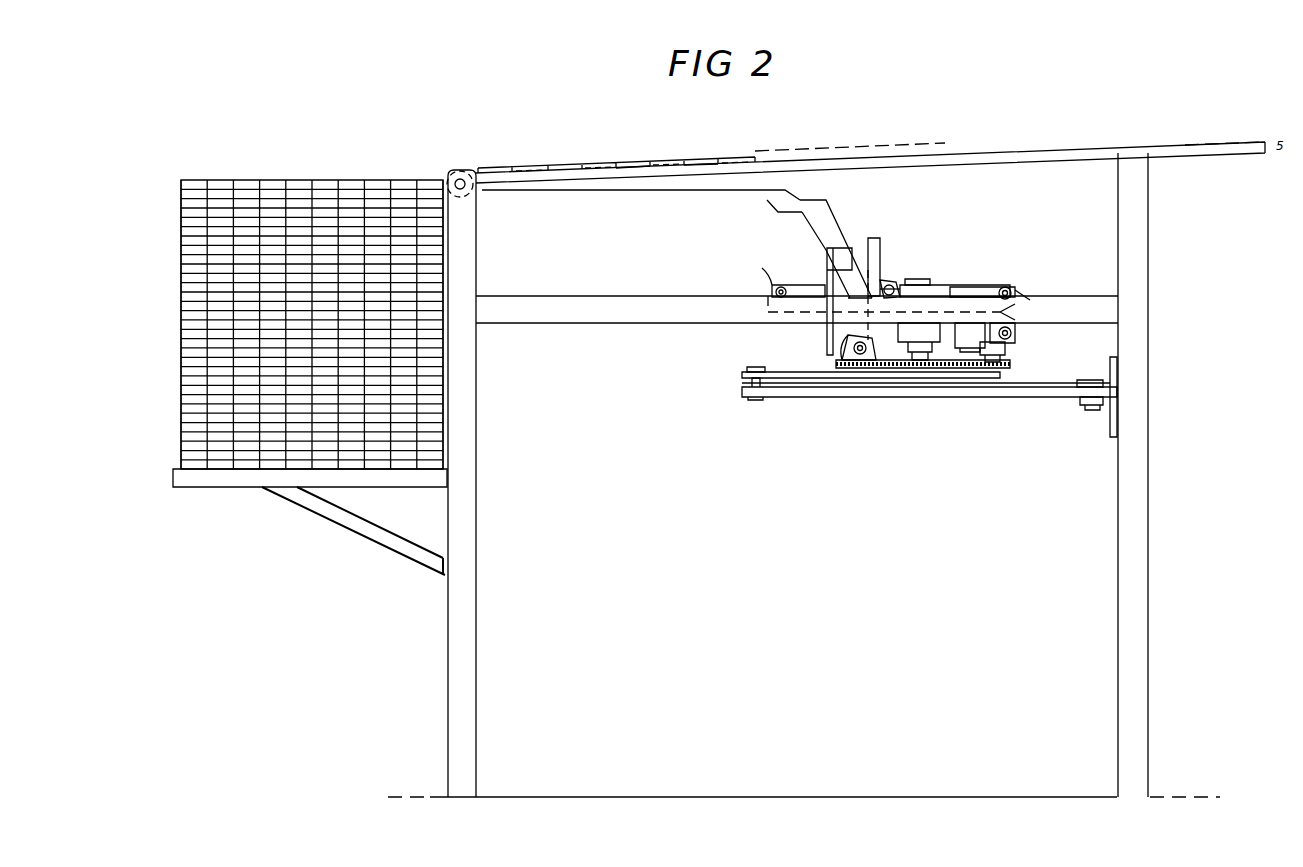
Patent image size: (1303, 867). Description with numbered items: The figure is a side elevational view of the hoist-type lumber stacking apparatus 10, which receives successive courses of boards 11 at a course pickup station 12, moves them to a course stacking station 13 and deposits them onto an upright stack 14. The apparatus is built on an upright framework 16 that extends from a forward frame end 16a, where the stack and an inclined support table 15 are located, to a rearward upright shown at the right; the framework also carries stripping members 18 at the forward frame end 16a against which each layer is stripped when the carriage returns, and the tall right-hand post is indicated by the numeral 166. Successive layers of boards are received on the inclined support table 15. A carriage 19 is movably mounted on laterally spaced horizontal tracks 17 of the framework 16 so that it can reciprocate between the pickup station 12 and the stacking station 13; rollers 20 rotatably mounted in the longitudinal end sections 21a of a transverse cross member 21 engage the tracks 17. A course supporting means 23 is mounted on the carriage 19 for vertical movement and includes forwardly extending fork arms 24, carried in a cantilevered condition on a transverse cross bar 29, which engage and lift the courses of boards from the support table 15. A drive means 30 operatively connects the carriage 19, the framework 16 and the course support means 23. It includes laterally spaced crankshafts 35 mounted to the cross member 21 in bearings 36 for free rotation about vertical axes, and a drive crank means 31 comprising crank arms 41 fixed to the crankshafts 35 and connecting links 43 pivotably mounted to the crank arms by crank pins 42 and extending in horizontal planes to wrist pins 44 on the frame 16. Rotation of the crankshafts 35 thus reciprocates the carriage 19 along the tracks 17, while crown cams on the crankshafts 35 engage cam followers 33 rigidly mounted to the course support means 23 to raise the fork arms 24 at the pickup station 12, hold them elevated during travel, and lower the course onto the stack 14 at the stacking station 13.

The hoist-type stacking apparatus 10 is at (956, 150).
The boards 11 is at (621, 162).
The course pickup station 12 is at (566, 160).
The course stacking station 13 is at (296, 178).
The upright stack 14 is at (181, 231).
The inclined support table 15 is at (695, 171).
The upright framework 16 is at (648, 326).
The forward frame end 16a is at (478, 522).
The right column 166 is at (1147, 266).
The horizontal tracks 17 is at (631, 298).
The stripping members 18 is at (460, 170).
The carriage 19 is at (996, 290).
The rollers 20 is at (776, 288).
The transverse cross member 21 is at (936, 298).
The longitudinal end sections 21a is at (1018, 298).
The course supporting means 23 is at (834, 206).
The fork arms 24 is at (652, 192).
The transverse cross bar 29 is at (840, 262).
The drive means 30 is at (1012, 361).
The drive crank means 31 is at (868, 398).
The cam followers 33 is at (832, 355).
The crankshafts 35 is at (936, 366).
The bearings 36 is at (930, 286).
The crank arms 41 is at (745, 373).
The crank pins 42 is at (758, 366).
The connecting links 43 is at (800, 392).
The wrist pins 44 is at (1092, 402).